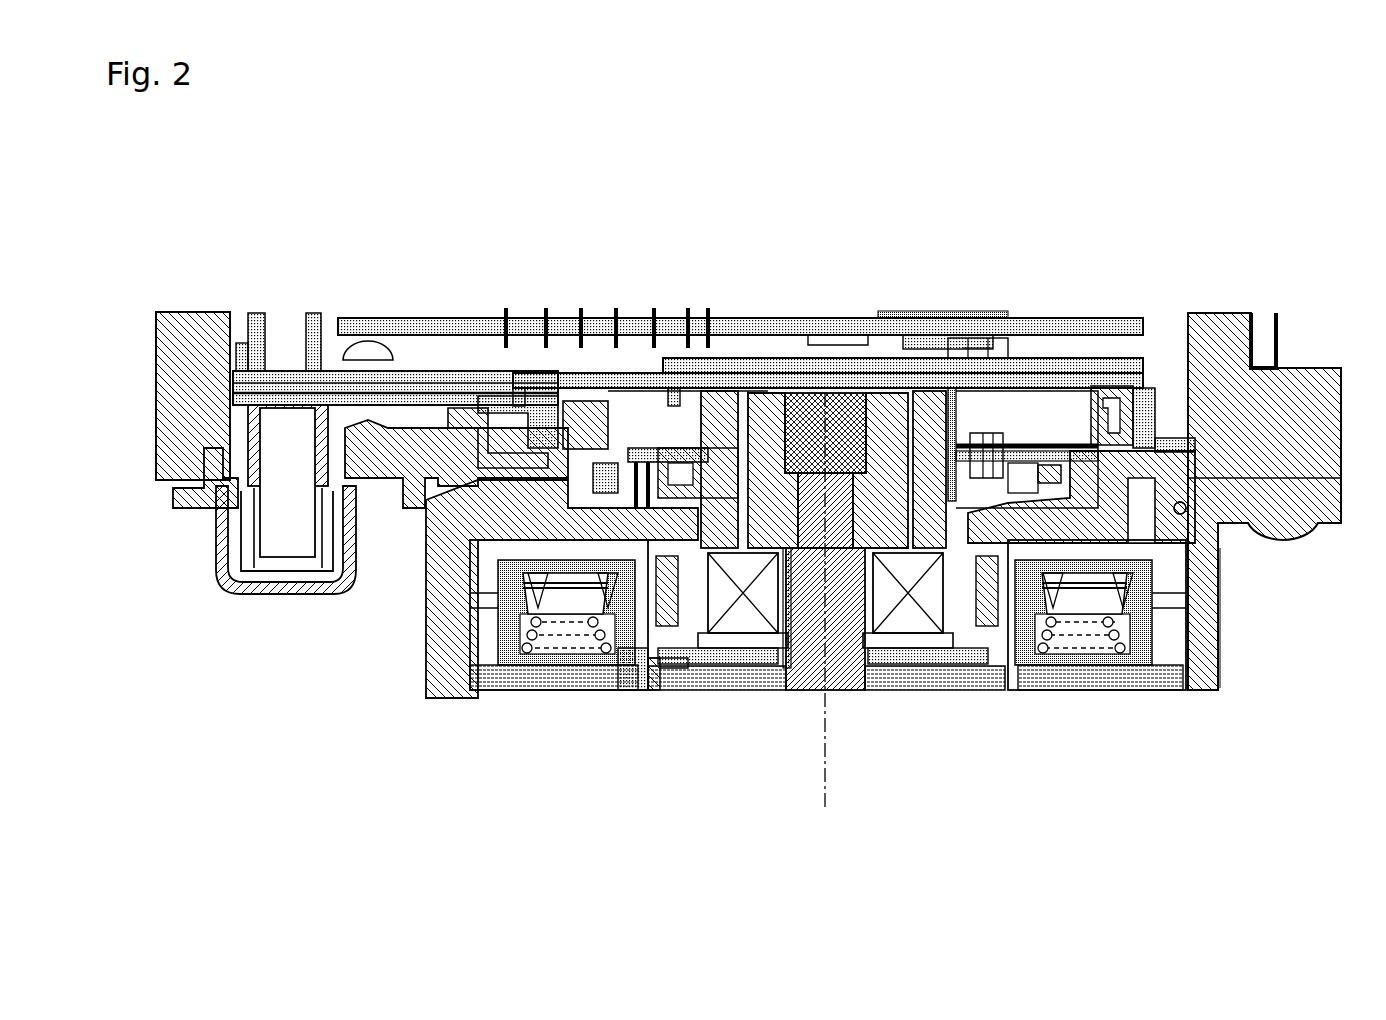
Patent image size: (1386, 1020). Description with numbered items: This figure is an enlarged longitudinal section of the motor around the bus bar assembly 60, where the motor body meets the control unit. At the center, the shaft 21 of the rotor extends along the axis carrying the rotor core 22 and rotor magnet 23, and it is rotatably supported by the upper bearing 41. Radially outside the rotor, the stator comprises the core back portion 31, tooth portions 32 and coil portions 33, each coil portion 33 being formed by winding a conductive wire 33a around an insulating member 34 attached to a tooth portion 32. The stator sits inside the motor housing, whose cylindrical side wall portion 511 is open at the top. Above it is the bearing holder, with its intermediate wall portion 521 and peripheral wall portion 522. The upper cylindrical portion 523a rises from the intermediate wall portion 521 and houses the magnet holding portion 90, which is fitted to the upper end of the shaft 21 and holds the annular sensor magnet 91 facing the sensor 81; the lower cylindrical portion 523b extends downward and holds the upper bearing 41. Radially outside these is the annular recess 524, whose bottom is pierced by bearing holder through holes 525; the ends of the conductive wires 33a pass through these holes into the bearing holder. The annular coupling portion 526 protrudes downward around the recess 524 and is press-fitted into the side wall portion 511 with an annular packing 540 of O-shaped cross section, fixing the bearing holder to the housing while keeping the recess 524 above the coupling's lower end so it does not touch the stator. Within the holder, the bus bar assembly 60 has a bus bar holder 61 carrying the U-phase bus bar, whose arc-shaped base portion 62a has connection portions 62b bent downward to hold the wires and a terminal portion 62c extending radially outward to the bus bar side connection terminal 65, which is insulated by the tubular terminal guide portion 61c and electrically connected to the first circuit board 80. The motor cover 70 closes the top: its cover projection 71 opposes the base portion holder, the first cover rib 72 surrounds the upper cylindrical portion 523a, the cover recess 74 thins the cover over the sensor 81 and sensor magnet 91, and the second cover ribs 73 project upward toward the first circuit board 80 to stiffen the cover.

The shaft 21 is at (838, 670).
The rotor core 22 is at (720, 672).
The rotor magnet 23 is at (661, 680).
The core back portion 31 is at (1160, 660).
The tooth portion 32 is at (1048, 680).
The coil portion 33 is at (1078, 660).
The conductive wire 33a is at (958, 640).
The insulating member 34 is at (1140, 660).
The upper bearing 41 is at (757, 665).
The bus bar assembly 60 is at (482, 398).
The bus bar holder 61 is at (312, 360).
The terminal guide portion 61c is at (206, 565).
The base portion 62a is at (492, 395).
The connection portion 62b is at (580, 395).
The terminal portion 62c is at (455, 385).
The bus bar side connection terminal 65 is at (270, 440).
The motor cover 70 is at (1015, 380).
The cover projection 71 is at (1075, 380).
The first cover rib 72 is at (978, 380).
The second cover rib 73 is at (930, 380).
The cover recess 74 is at (852, 382).
The first circuit board 80 is at (535, 310).
The sensor 81 is at (826, 385).
The magnet holding portion 90 is at (676, 378).
The sensor magnet 91 is at (770, 385).
The side wall portion 511 is at (1212, 640).
The intermediate wall portion 521 is at (1142, 398).
The peripheral wall portion 522 is at (1252, 318).
The upper cylindrical portion 523a is at (712, 348).
The lower cylindrical portion 523b is at (687, 660).
The recess 524 is at (1083, 378).
The bearing holder through hole 525 is at (1065, 425).
The annular coupling portion 526 is at (1168, 490).
The annular packing 540 is at (1215, 533).